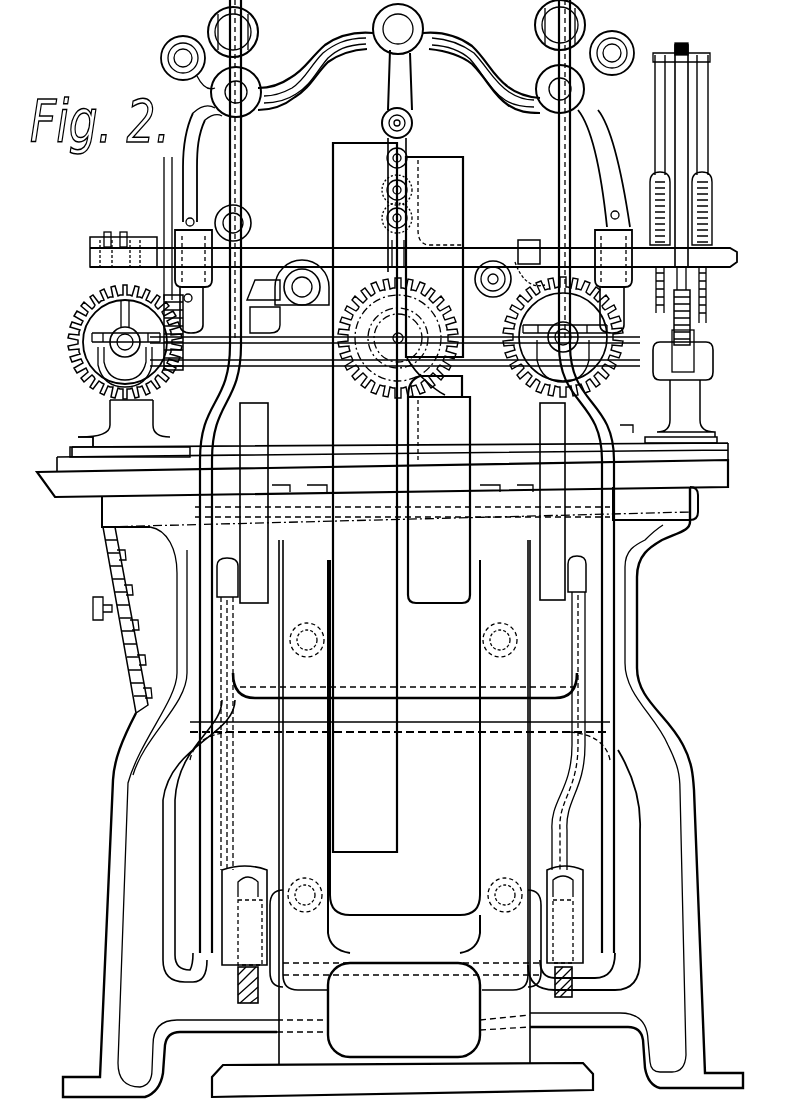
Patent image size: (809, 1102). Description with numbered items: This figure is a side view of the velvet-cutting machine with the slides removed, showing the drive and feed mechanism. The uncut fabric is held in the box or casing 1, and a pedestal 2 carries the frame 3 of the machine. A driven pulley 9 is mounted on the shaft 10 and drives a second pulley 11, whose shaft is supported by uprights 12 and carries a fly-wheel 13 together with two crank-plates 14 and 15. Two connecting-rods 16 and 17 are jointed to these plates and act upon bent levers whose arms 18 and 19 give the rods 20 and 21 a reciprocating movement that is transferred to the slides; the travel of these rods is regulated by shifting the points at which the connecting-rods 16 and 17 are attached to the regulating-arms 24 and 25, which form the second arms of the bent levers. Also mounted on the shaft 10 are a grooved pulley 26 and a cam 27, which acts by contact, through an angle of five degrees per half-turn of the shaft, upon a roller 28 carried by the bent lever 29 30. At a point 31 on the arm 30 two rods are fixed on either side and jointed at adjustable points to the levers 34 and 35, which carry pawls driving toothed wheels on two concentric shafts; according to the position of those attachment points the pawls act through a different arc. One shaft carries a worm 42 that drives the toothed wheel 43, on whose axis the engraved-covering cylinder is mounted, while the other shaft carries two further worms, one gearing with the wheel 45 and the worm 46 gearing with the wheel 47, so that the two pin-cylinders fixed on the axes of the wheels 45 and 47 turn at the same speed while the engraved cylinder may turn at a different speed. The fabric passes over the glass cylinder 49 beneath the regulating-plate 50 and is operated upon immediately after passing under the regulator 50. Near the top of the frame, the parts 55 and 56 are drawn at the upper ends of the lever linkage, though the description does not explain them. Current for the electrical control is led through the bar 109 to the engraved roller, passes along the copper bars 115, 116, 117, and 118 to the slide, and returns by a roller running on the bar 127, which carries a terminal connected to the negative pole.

The box or casing 1 is at (403, 792).
The pedestal 2 is at (382, 471).
The frame 3 is at (195, 140).
The pulley 9 is at (434, 276).
The shaft 10 is at (722, 252).
The pulley 11 is at (439, 489).
The uprights 12 is at (405, 802).
The fly-wheel 13 is at (404, 548).
The crank-plate 14 is at (245, 636).
The crank-plate 15 is at (565, 572).
The connecting-rod 16 is at (225, 712).
The connecting-rod 17 is at (600, 690).
The arm of bent lever 18 is at (200, 772).
The arm of bent lever 19 is at (612, 795).
The rod 20 is at (250, 25).
The rod 21 is at (572, 22).
The regulating-arm 24 is at (252, 943).
The regulating-arm 25 is at (560, 940).
The grooved pulley 26 is at (168, 177).
The cam 27 is at (700, 270).
The roller 28 is at (690, 318).
The bent lever 29 is at (683, 362).
The arm of bent lever 30 is at (683, 135).
The point 31 is at (690, 40).
The lever 34 is at (700, 88).
The lever 35 is at (658, 103).
The worm 42 is at (535, 233).
The toothed wheel 43 is at (538, 372).
The wheel 45 is at (437, 378).
The worm 46 is at (130, 224).
The wheel 47 is at (97, 300).
The glass cylinder 49 is at (305, 295).
The regulating-plate 50 is at (263, 292).
The pulley 55 is at (220, 72).
The hub 56 is at (258, 105).
The bar 109 is at (492, 260).
The copper bar 115 is at (390, 220).
The copper bar 116 is at (390, 191).
The copper bar 117 is at (390, 158).
The copper bar 118 is at (390, 118).
The bar 127 is at (243, 218).